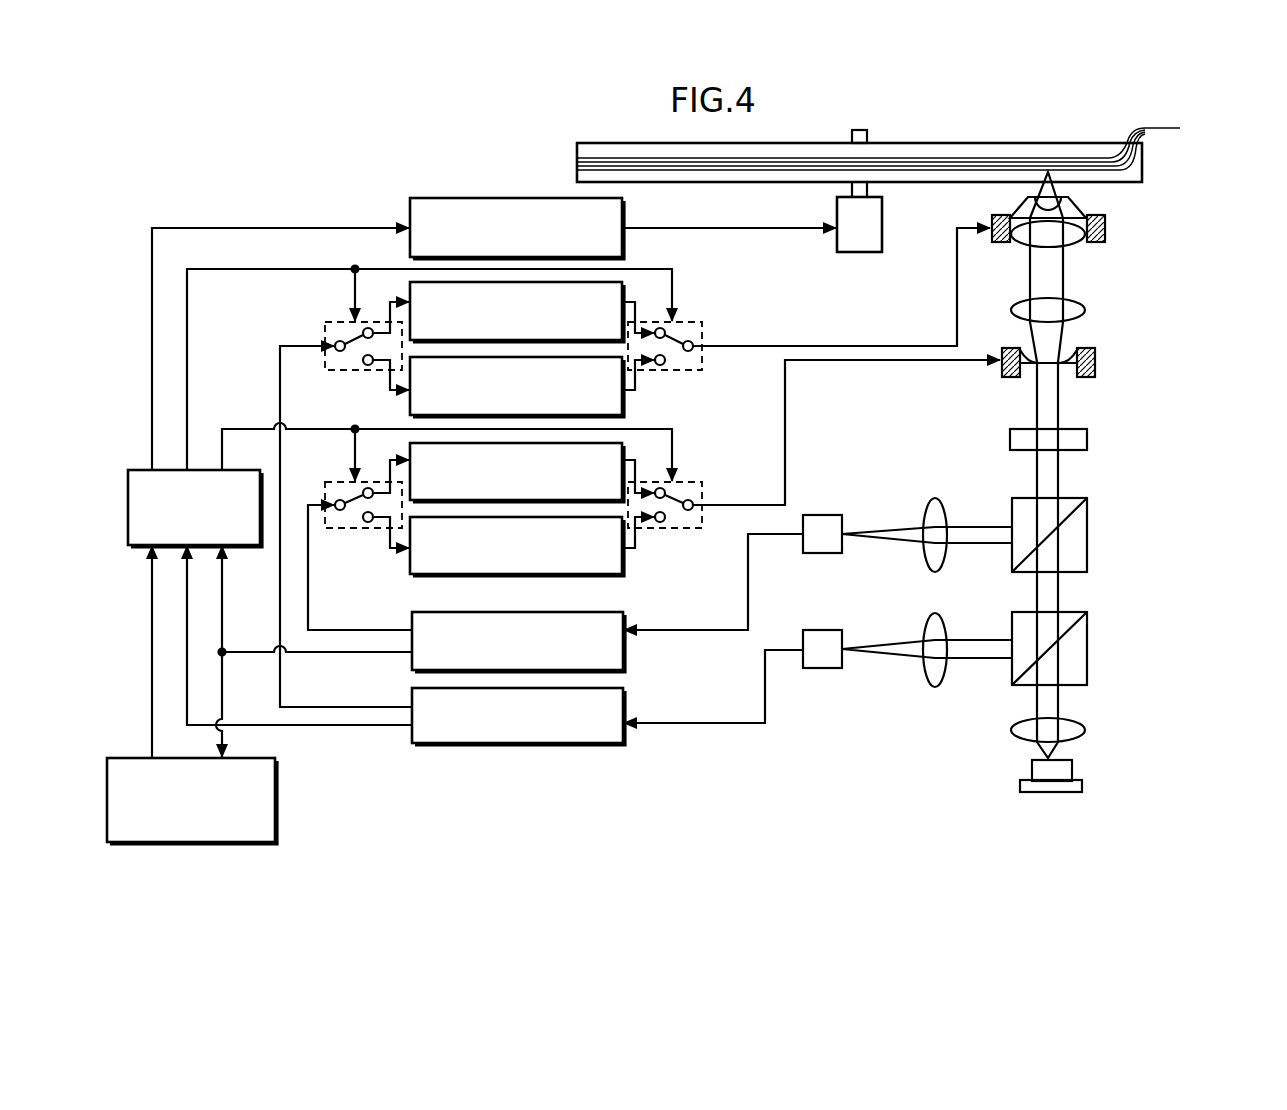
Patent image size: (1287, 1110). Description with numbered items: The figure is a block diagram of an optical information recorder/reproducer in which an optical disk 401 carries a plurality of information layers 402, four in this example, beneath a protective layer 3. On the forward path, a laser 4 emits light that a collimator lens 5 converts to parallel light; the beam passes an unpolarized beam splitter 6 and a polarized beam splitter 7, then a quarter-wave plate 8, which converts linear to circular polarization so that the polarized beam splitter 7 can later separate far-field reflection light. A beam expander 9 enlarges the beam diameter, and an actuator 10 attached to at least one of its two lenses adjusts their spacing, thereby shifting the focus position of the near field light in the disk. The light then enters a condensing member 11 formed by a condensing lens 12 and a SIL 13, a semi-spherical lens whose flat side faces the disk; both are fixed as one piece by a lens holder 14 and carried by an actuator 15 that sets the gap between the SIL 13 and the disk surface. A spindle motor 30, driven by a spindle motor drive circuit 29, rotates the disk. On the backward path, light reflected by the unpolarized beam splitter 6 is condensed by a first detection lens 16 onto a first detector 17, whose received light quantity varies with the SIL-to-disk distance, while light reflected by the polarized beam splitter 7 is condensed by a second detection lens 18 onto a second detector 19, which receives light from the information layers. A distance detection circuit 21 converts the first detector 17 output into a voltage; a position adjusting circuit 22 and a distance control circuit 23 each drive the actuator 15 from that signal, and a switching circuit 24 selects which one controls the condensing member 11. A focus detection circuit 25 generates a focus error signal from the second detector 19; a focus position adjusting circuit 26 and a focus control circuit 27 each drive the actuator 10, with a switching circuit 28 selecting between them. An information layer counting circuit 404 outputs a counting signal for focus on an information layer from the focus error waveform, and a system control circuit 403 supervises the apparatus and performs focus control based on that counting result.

The protective layer 3 is at (1135, 178).
The laser 4 is at (1055, 770).
The collimator lens 5 is at (1075, 730).
The unpolarized beam splitter 6 is at (1072, 660).
The polarized beam splitter 7 is at (1072, 548).
The quarter-wave plate 8 is at (1075, 438).
The beam expander 9 is at (1068, 362).
The actuator 10 is at (1097, 358).
The condensing member 11 is at (1096, 234).
The condensing lens 12 is at (1078, 240).
The SIL (solid immersion lens) 13 is at (1090, 208).
The lens holder 14 is at (1024, 200).
The actuator 15 is at (992, 224).
The first detection lens 16 is at (930, 681).
The first detector 17 is at (822, 671).
The second detection lens 18 is at (930, 566).
The second detector 19 is at (822, 556).
The distance detection circuit 21 is at (623, 700).
The position adjusting circuit 22 is at (622, 290).
The distance control circuit 23 is at (622, 405).
The switching circuit 24 is at (335, 321).
The focus detection circuit 25 is at (623, 656).
The focus position adjusting circuit 26 is at (622, 446).
The focus control circuit 27 is at (603, 577).
The switching circuit 28 is at (350, 531).
The spindle motor drive circuit 29 is at (622, 213).
The spindle motor 30 is at (862, 242).
The optical disk 401 is at (932, 144).
The information layers 402 is at (1218, 178).
The system control circuit 403 is at (135, 470).
The information layer counting circuit 404 is at (278, 773).